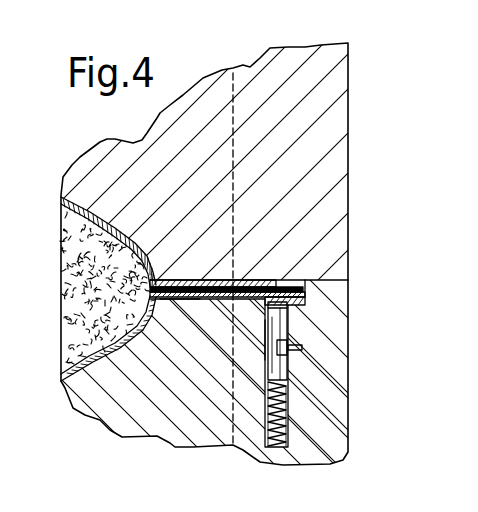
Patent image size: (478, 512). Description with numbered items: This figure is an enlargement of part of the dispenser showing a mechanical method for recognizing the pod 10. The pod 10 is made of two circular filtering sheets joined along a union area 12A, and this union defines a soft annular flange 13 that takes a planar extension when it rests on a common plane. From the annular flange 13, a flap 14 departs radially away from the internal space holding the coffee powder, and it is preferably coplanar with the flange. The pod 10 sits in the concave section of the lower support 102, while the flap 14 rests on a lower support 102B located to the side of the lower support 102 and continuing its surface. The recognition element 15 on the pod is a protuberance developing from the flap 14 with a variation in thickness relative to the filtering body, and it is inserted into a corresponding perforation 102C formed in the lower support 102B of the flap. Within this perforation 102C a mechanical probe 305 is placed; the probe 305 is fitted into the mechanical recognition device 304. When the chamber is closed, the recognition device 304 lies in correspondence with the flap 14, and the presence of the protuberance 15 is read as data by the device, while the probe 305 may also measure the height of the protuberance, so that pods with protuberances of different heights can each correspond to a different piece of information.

The pod 10 is at (57, 299).
The union area 12A is at (197, 280).
The annular flange 13 is at (175, 303).
The flap 14 is at (282, 278).
The recognition element 15 is at (281, 301).
The lower support 102 is at (182, 428).
The lower support of the flap 102B is at (207, 319).
The perforation 102C is at (277, 322).
The mechanical recognition device 304 is at (308, 374).
The mechanical probe 305 is at (275, 323).